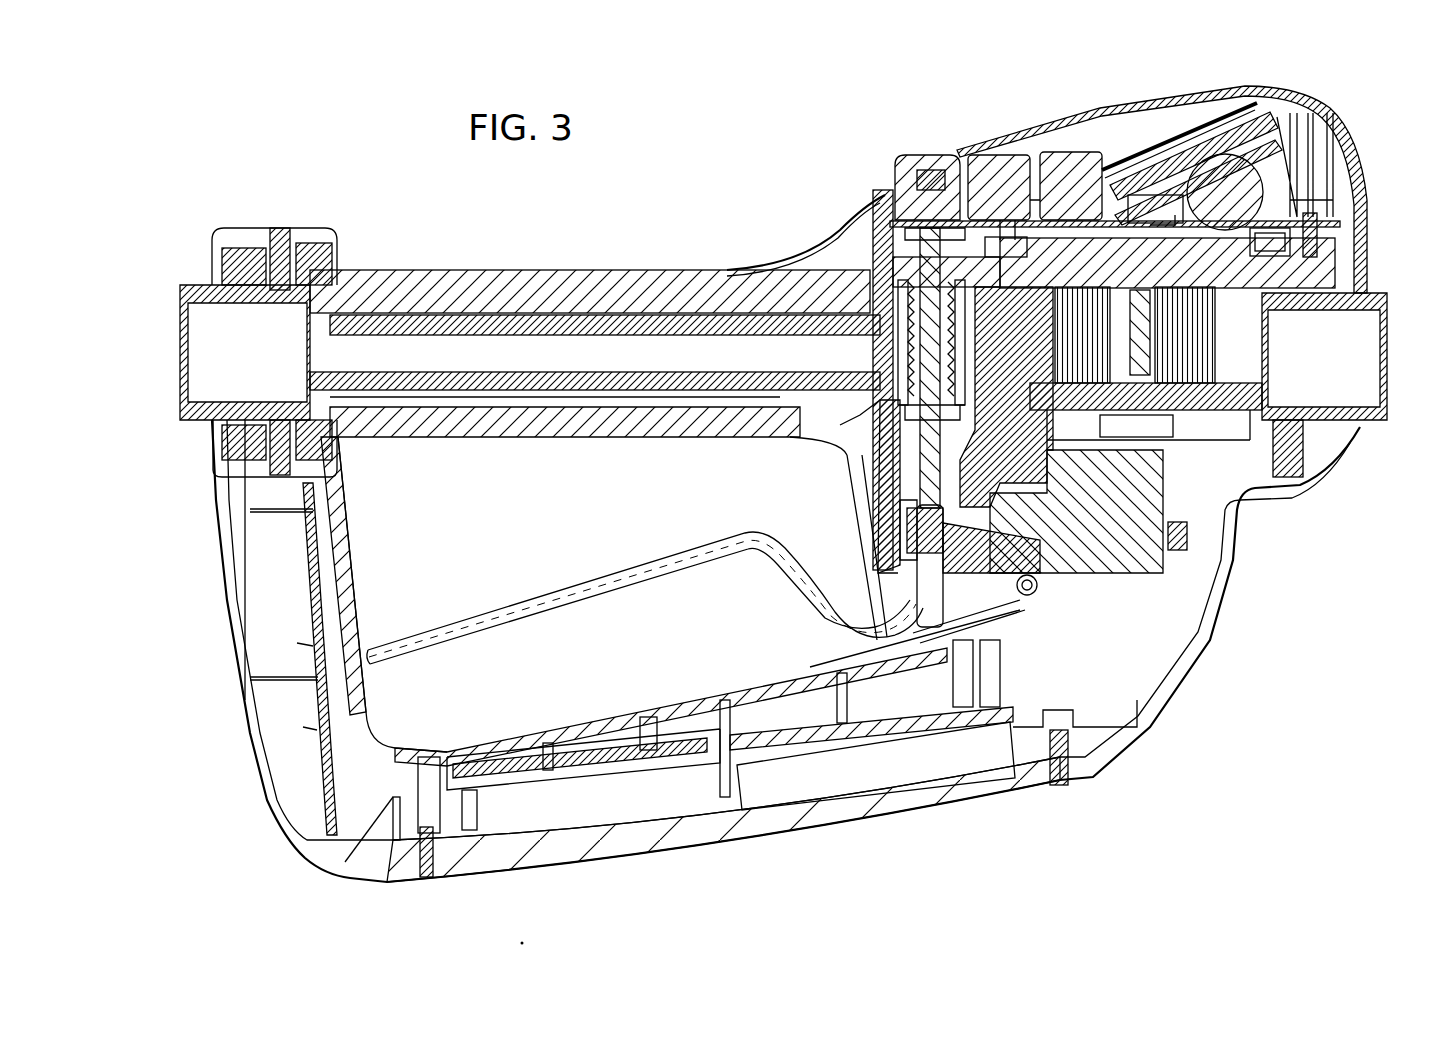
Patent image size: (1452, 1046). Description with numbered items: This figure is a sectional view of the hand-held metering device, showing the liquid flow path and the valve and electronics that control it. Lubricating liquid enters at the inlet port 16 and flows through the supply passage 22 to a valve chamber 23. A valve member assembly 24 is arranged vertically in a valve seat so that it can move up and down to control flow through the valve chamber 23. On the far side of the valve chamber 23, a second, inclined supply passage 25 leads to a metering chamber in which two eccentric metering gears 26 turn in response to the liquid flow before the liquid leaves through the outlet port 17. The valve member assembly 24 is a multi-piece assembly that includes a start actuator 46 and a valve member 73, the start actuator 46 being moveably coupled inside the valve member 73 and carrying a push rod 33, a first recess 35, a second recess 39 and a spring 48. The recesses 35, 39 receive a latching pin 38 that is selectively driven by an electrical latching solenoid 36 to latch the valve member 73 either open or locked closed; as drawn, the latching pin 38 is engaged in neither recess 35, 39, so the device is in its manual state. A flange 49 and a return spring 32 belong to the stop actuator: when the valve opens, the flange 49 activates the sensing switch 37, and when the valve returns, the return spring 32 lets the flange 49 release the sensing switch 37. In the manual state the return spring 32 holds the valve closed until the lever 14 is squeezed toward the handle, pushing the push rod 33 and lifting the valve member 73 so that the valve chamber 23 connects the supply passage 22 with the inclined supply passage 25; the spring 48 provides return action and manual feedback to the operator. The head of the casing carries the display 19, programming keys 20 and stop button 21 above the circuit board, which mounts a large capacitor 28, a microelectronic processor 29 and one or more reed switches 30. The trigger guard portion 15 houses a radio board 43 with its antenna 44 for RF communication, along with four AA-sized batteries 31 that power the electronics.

The lever 14 is at (418, 625).
The trigger guard portion 15 is at (295, 795).
The inlet port 16 is at (180, 332).
The outlet port 17 is at (1390, 330).
The display 19 is at (1223, 120).
The programming keys 20 is at (1020, 150).
The stop button 21 is at (915, 162).
The supply passage 22 is at (388, 345).
The valve chamber 23 is at (903, 423).
The valve member assembly 24 is at (905, 452).
The second inclined supply passage 25 is at (1042, 380).
The eccentric metering gears 26 is at (1215, 362).
The large capacitor 28 is at (1240, 168).
The microelectronic processor 29 is at (1168, 228).
The reed switch 30 is at (1146, 197).
The AA-sized batteries 31 is at (690, 810).
The return spring 32 is at (862, 245).
The push rod 33 is at (955, 632).
The first recess 35 is at (977, 575).
The electrical latching solenoid 36 is at (1163, 573).
The sensing switch 37 is at (920, 235).
The latching pin 38 is at (1040, 590).
The second recess 39 is at (977, 470).
The radio board 43 is at (588, 752).
The antenna 44 is at (300, 583).
The start actuator 46 is at (908, 596).
The spring 48 is at (937, 478).
The flange 49 is at (905, 232).
The valve member 73 is at (952, 398).